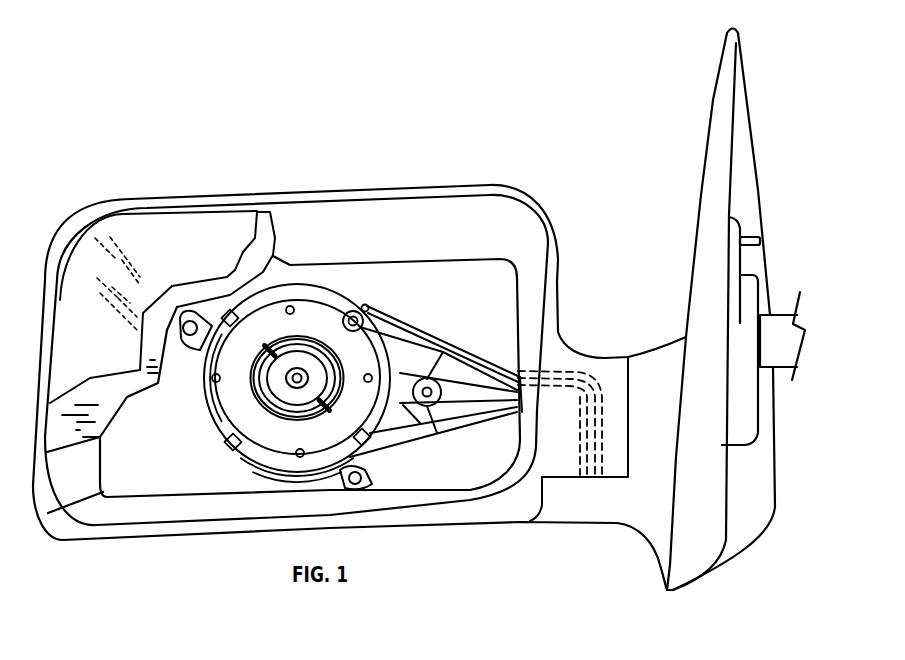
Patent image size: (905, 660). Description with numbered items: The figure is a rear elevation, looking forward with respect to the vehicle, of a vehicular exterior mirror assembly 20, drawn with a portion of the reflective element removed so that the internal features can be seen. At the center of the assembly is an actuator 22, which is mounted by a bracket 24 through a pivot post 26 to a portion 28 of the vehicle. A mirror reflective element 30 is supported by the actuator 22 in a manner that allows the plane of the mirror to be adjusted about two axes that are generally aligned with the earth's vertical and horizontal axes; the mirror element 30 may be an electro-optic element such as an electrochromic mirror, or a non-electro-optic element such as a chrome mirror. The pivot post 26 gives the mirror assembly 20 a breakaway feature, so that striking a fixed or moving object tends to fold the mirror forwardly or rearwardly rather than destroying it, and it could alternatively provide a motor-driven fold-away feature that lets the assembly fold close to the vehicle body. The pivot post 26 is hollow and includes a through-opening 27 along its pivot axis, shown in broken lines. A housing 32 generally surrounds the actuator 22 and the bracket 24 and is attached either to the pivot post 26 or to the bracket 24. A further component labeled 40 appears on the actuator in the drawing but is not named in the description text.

The vehicular exterior mirror assembly 20 is at (240, 177).
The actuator 22 is at (412, 315).
The bracket 24 is at (443, 347).
The pivot post 26 is at (583, 463).
The through-opening 27 is at (581, 372).
The portion of a vehicle 28 is at (712, 123).
The mirror reflective element 30 is at (255, 227).
The housing 32 is at (429, 187).
The actuator motor 40 is at (330, 291).